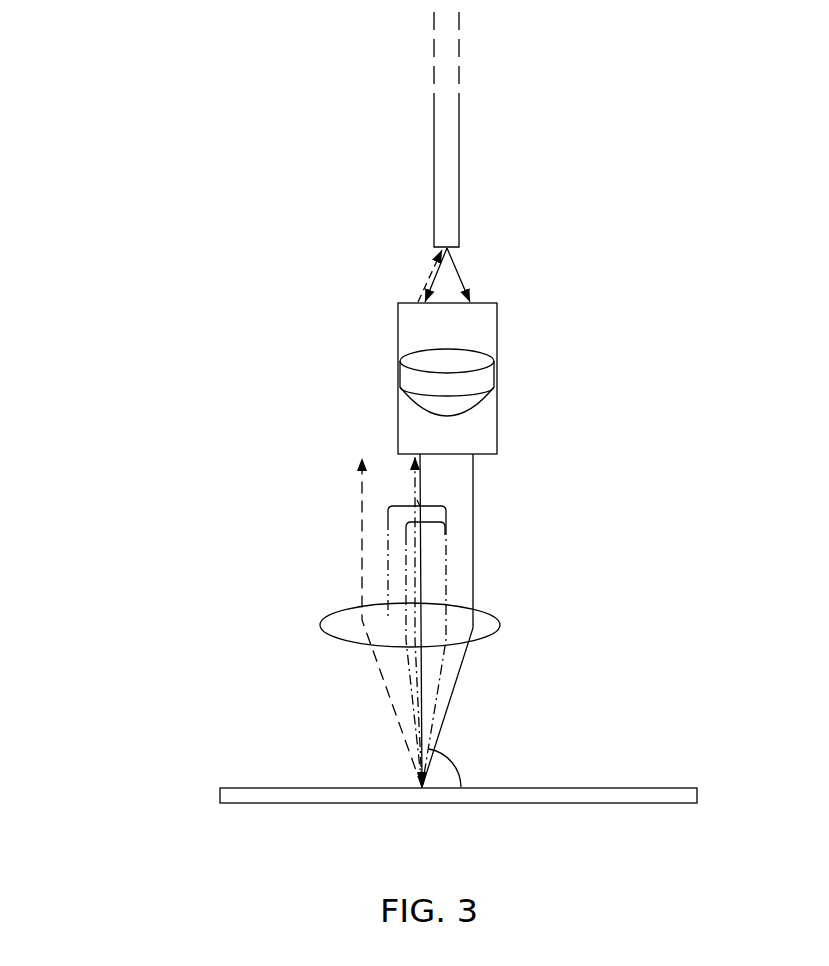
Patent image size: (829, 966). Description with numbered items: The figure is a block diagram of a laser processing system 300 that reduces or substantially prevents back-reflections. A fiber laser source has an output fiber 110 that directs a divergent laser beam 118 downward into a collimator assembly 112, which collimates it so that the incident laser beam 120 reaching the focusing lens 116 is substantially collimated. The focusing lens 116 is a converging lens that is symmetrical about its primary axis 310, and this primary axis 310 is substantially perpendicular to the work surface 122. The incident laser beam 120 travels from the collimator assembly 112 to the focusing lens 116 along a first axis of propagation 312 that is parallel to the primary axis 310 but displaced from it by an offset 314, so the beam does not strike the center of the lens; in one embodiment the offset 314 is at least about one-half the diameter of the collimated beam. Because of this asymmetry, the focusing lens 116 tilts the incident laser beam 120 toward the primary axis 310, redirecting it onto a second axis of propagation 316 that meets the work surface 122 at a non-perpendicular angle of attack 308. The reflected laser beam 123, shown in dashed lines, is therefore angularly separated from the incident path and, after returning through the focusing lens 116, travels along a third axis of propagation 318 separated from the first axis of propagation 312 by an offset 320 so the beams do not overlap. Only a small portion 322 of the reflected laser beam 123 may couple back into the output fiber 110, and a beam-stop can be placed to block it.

The laser processing system 300 is at (268, 72).
The output fiber 110 is at (460, 187).
The divergent laser beam 118 is at (460, 268).
The small portion of the reflected laser beam 322 is at (420, 283).
The collimator assembly 112 is at (497, 338).
The incident laser beam 120 is at (474, 470).
The offset 320 is at (417, 500).
The offset 314 is at (388, 508).
The third axis of propagation 318 is at (387, 543).
The primary axis 310 is at (405, 665).
The first axis of propagation 312 is at (447, 553).
The reflected laser beam 123 is at (383, 692).
The focusing lens 116 is at (320, 620).
The second axis of propagation 316 is at (447, 670).
The angle of attack 308 is at (447, 758).
The work surface 122 is at (317, 788).